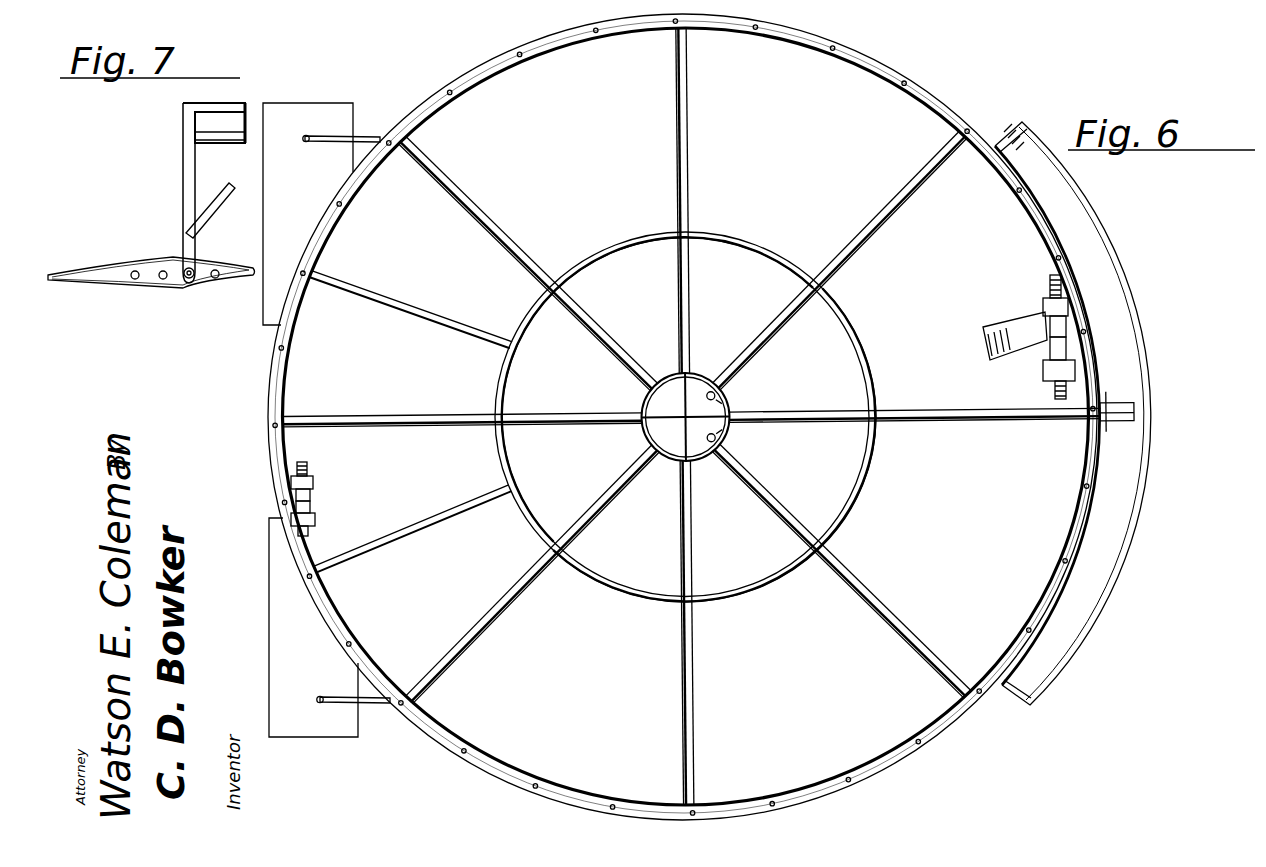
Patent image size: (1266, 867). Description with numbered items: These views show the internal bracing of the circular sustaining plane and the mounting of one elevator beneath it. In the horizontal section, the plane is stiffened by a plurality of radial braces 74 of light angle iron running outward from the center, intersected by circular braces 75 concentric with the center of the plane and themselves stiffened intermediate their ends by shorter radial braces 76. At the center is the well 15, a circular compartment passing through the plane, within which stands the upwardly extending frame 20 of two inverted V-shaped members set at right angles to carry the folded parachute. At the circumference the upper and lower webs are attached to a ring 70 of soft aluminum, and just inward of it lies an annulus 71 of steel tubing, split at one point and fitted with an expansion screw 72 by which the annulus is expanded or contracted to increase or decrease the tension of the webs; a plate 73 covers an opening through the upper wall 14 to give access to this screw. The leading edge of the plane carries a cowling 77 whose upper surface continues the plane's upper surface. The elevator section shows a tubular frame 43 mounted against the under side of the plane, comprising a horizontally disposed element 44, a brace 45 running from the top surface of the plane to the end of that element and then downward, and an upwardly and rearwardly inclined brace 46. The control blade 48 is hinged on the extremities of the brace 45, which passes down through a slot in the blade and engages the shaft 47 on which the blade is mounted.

In FIG. 6, the upper wall 14 is at (852, 251).
In FIG. 6, the well 15 is at (660, 436).
In FIG. 6, the upwardly extending frame 20 is at (665, 410).
In FIG. 6, the frame 43 is at (304, 143).
In FIG. 7, the frame 43 is at (182, 195).
In FIG. 6, the horizontally disposed element 44 is at (366, 135).
In FIG. 7, the horizontally disposed element 44 is at (223, 137).
In FIG. 7, the brace 45 is at (214, 105).
In FIG. 7, the upwardly and rearwardly inclined brace 46 is at (215, 206).
In FIG. 7, the shaft 47 is at (190, 284).
In FIG. 6, the control blade 48 is at (330, 105).
In FIG. 7, the control blade 48 is at (88, 284).
In FIG. 6, the ring 70 is at (270, 404).
In FIG. 6, the annulus 71 is at (289, 356).
In FIG. 6, the expansion screw 72 is at (317, 493).
In FIG. 6, the plate 73 is at (1003, 328).
In FIG. 6, the radial brace 74 is at (505, 242).
In FIG. 6, the circular brace 75 is at (606, 250).
In FIG. 6, the radial brace 76 is at (436, 312).
In FIG. 6, the cowling 77 is at (1123, 258).